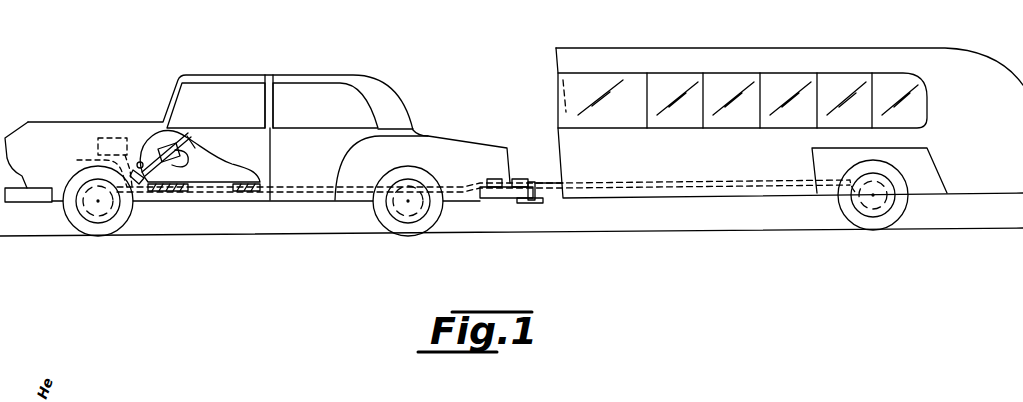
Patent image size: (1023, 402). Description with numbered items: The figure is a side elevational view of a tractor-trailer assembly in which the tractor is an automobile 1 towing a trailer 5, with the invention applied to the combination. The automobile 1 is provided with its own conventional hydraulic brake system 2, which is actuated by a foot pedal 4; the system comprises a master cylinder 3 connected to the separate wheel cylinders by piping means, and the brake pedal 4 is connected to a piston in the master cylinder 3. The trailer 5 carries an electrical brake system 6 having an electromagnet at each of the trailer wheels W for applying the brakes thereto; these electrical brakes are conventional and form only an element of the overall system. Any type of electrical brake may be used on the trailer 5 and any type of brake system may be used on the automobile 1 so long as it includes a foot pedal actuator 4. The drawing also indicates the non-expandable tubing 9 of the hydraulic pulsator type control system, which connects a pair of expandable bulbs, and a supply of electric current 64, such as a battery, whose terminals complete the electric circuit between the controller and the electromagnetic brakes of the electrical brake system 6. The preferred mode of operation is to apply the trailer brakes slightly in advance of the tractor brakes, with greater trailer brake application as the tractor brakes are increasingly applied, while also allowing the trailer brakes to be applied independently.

The automobile 1 is at (420, 130).
The hydraulic brake system 2 is at (230, 193).
The master cylinder 3 is at (96, 167).
The foot pedal 4 is at (207, 155).
The trailer 5 is at (826, 46).
The electrical brake system 6 is at (889, 182).
The non-expandable tubing 9 is at (147, 157).
The supply of electric current 64 is at (108, 137).
The trailer wheels W is at (872, 229).